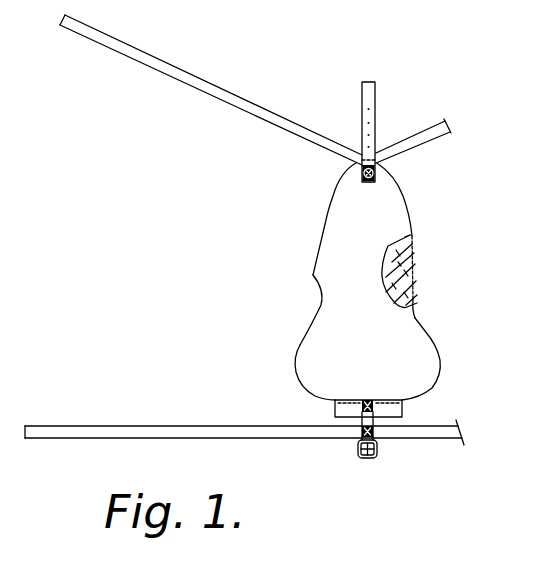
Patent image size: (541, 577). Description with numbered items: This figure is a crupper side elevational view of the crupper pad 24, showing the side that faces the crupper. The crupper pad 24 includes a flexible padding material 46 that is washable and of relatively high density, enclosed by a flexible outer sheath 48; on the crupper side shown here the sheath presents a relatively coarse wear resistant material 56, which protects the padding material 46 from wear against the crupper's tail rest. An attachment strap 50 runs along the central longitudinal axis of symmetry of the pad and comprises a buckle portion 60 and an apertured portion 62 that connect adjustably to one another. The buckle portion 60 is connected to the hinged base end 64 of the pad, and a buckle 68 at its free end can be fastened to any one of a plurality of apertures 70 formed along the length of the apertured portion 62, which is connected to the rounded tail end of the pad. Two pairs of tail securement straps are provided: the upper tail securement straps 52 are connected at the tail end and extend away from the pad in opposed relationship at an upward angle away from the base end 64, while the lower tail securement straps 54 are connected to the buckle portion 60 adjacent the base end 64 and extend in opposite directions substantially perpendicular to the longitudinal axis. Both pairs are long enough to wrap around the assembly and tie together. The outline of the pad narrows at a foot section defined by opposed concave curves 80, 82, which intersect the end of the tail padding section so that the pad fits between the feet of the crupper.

The attachment strap 50 is at (395, 73).
The upper tail securement straps 52 is at (163, 58).
The lower tail securement straps 54 is at (442, 432).
The wear resistant material 56 is at (374, 281).
The crupper pad 24 is at (296, 226).
The flexible padding material 46 is at (420, 275).
The flexible outer sheath 48 is at (415, 250).
The buckle portion 60 is at (363, 420).
The apertured portion 62 is at (377, 107).
The hinged base end 64 is at (402, 408).
The buckle 68 is at (373, 460).
The apertures 70 is at (370, 100).
The concave curve 80 is at (322, 318).
The concave curve 82 is at (415, 318).